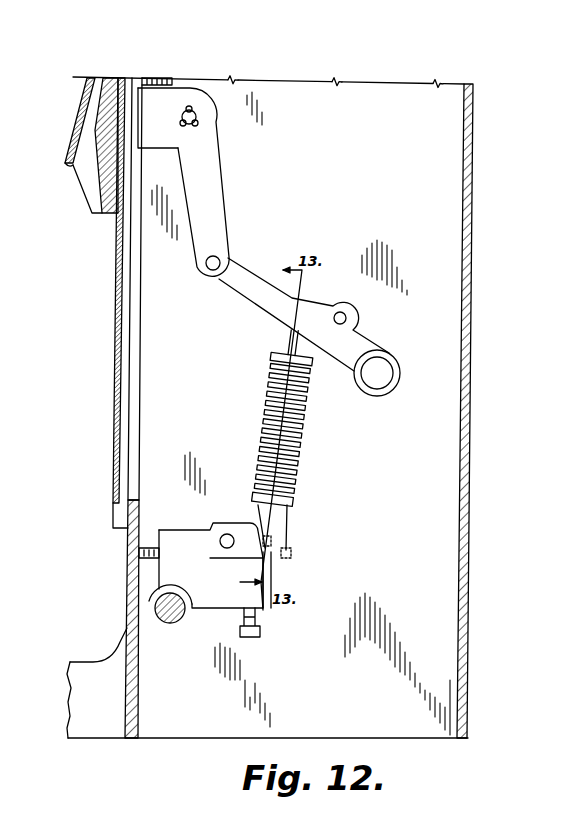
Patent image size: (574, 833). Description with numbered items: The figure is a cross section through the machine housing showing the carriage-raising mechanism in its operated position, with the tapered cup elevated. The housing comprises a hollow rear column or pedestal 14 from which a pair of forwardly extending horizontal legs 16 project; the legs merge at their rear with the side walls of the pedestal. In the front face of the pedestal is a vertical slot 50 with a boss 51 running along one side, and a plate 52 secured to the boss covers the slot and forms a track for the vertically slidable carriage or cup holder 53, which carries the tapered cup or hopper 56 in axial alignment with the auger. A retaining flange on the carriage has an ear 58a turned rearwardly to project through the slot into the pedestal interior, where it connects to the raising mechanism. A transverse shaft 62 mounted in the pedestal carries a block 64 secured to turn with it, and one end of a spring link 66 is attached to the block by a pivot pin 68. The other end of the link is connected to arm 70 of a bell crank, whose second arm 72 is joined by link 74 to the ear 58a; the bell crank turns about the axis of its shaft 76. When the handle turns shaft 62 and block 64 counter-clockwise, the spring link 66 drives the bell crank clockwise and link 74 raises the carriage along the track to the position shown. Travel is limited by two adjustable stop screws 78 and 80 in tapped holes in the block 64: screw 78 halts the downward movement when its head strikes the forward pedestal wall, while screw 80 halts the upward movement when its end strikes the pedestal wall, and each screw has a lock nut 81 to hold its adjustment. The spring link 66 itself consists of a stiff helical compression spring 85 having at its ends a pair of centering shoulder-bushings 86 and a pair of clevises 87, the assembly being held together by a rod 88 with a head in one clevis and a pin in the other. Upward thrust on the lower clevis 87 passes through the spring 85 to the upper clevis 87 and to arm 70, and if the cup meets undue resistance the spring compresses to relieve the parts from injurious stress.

The hollow rear column or pedestal 14 is at (473, 277).
The horizontal legs 16 is at (97, 667).
The vertical slot 50 is at (140, 322).
The boss 51 is at (120, 356).
The plate 52 is at (116, 449).
The carriage or cup holder 53 is at (93, 202).
The tapered cup or hopper 56 is at (87, 77).
The ear 58a is at (162, 140).
The transverse shaft 62 is at (172, 615).
The block 64 is at (180, 542).
The spring link 66 is at (281, 425).
The pivot pin 68 is at (227, 534).
The arm of the bell crank 70 is at (363, 337).
The second arm of the bell crank 72 is at (240, 287).
The link 74 is at (207, 184).
The shaft of the bell crank 76 is at (382, 373).
The adjustable stop screw 78 is at (257, 620).
The adjustable stop screw 80 is at (150, 548).
The lock nut 81 is at (273, 568).
The helical compression spring 85 is at (268, 410).
The centering shoulder-bushings 86 is at (273, 356).
The clevises 87 is at (283, 339).
The rod 88 is at (265, 441).